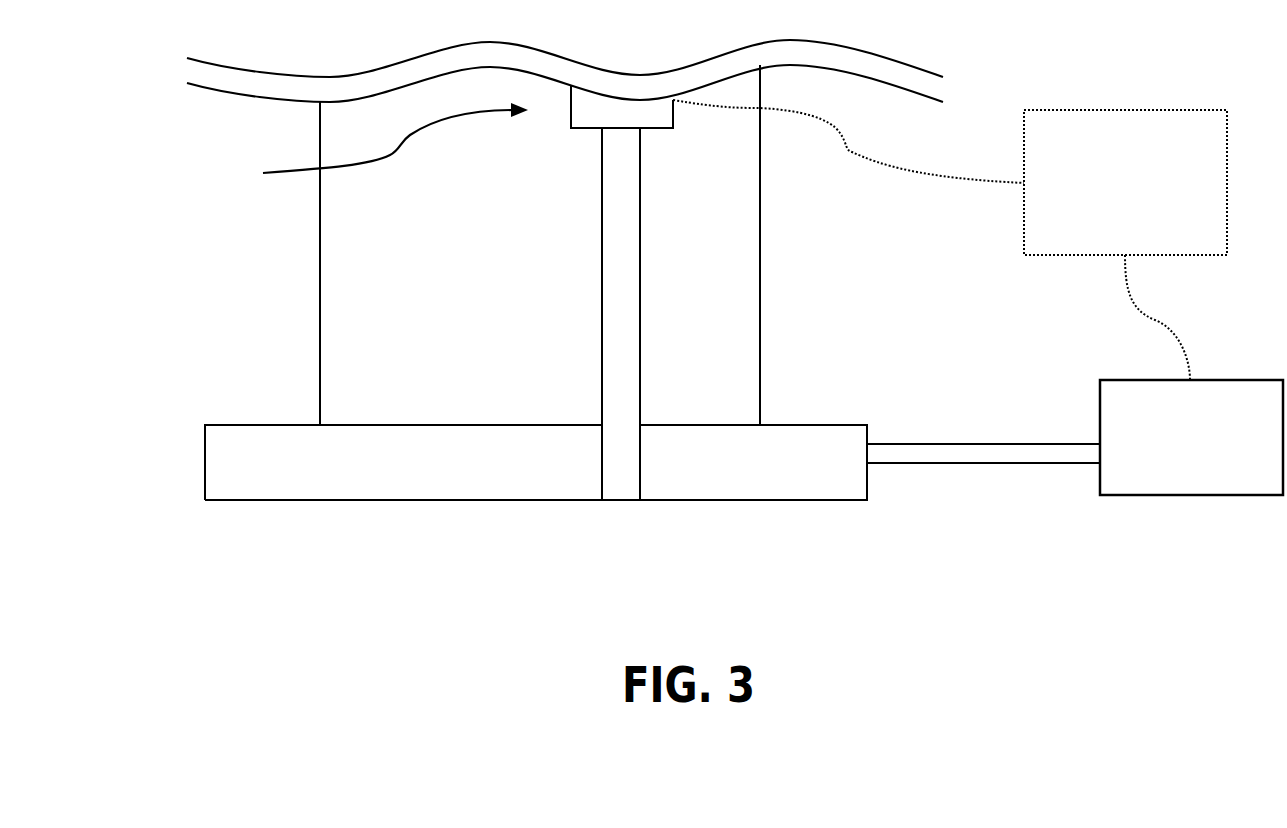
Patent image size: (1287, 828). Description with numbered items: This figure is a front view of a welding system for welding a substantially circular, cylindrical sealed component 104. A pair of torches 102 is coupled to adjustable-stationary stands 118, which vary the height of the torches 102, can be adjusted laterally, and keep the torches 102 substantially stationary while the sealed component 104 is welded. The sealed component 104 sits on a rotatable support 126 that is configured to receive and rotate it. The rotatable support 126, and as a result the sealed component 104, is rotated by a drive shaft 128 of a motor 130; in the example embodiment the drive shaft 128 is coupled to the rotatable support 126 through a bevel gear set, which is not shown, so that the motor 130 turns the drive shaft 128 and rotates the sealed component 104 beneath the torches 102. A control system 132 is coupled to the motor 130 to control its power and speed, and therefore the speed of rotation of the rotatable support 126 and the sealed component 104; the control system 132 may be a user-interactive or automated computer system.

The pair of torches 102 is at (359, 150).
The sealed component 104 is at (475, 270).
The adjustable-stationary stands 118 is at (627, 470).
The rotatable support 126 is at (400, 475).
The drive shaft 128 is at (980, 457).
The motor 130 is at (1212, 447).
The control system 132 is at (1149, 196).